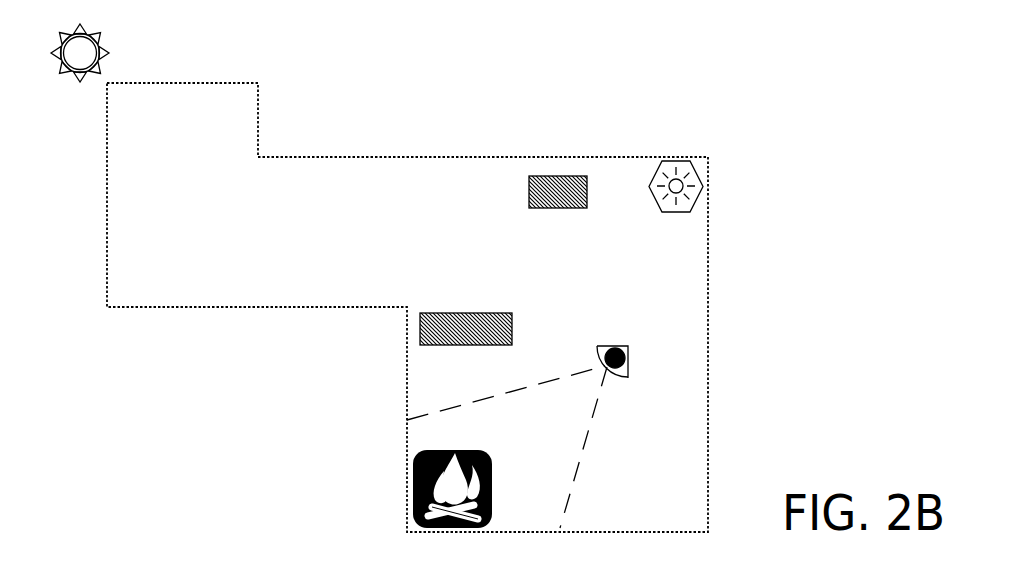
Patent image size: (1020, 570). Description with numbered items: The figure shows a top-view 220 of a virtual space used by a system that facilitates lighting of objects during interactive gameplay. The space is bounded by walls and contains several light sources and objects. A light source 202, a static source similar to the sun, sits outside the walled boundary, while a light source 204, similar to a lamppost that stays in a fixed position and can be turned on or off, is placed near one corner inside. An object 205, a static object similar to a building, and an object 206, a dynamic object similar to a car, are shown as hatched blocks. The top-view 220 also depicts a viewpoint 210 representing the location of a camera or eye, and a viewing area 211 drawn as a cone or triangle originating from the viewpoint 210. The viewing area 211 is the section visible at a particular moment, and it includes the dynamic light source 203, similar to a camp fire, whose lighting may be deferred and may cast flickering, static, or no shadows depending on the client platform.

The light source 202 is at (120, 41).
The dynamic light source 203 is at (548, 515).
The light source 204 is at (681, 232).
The object 205 is at (474, 297).
The object 206 is at (554, 225).
The viewpoint 210 is at (628, 365).
The viewing area 211 is at (575, 407).
The top-view 220 is at (192, 421).